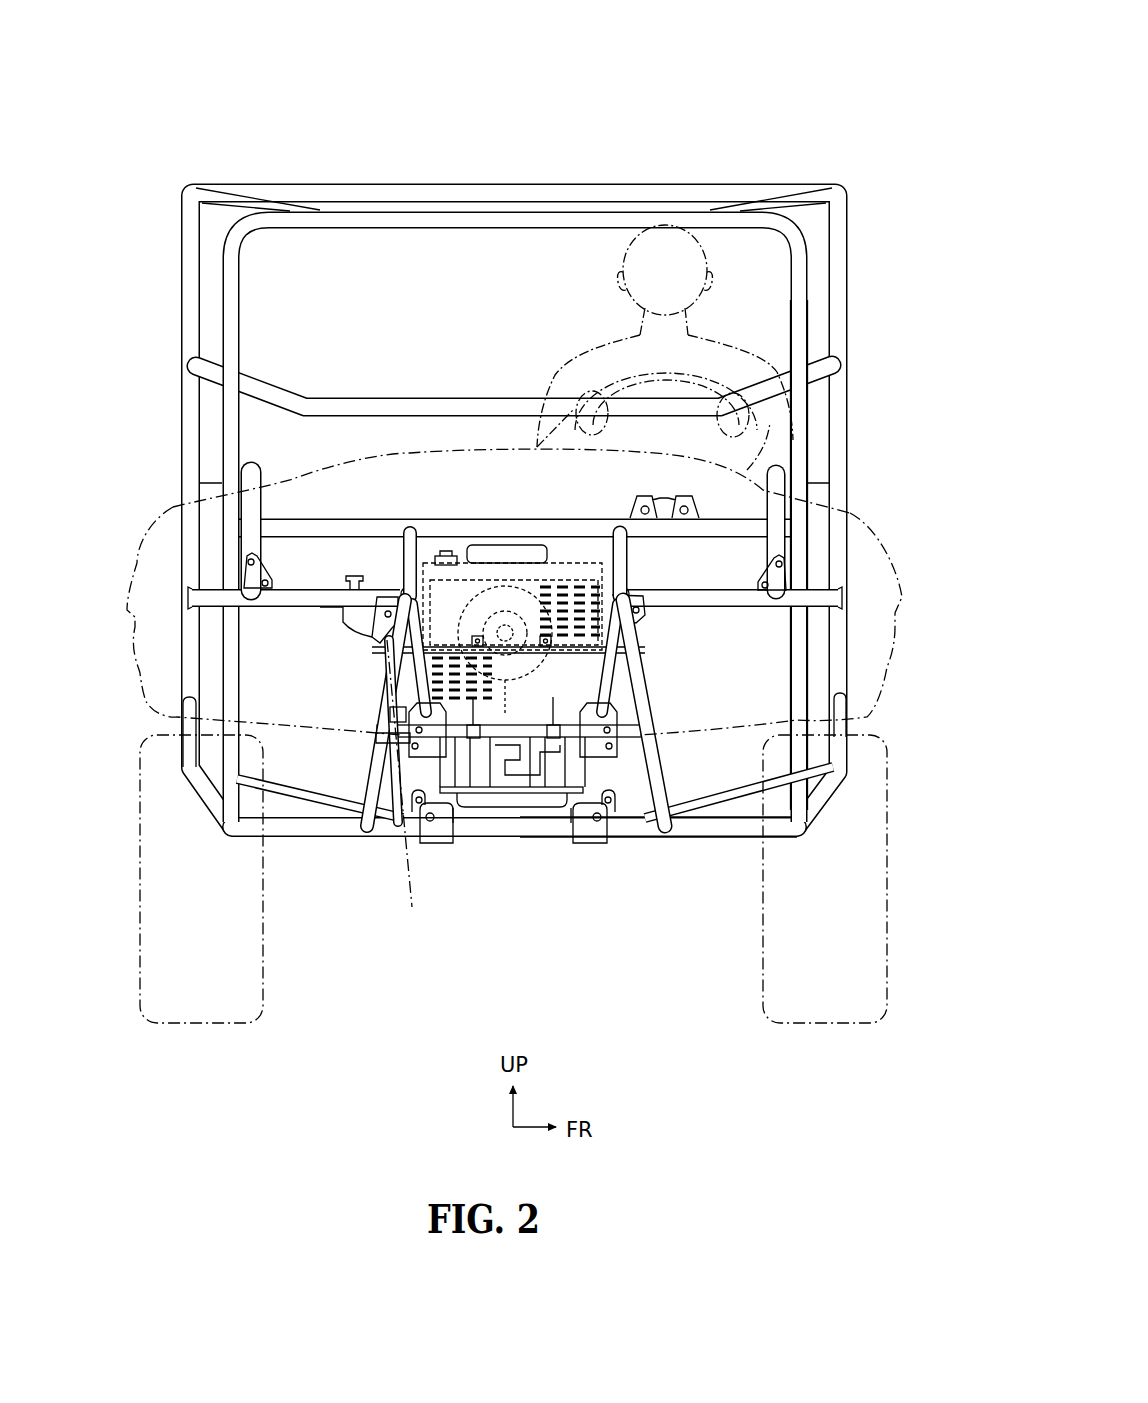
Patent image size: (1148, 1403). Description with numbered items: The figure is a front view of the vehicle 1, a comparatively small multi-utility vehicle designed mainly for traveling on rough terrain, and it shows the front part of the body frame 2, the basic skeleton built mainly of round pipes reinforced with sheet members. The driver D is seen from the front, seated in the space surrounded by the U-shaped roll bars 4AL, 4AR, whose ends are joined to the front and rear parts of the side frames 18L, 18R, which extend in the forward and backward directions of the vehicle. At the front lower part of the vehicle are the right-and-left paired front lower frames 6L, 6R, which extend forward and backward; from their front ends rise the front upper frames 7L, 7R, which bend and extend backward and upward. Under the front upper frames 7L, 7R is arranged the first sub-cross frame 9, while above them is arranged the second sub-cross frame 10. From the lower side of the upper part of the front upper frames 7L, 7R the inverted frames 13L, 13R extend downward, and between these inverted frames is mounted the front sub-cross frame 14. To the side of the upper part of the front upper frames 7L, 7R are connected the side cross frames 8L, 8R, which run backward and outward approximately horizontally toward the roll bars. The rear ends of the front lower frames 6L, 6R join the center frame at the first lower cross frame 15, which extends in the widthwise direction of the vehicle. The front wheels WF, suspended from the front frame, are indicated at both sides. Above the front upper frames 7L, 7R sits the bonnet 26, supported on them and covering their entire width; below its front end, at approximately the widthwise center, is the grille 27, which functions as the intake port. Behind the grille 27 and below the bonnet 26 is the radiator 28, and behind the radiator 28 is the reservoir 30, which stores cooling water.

The vehicle 1 is at (708, 93).
The body frame 2 is at (577, 203).
The roll bar 4AR is at (228, 292).
The roll bar 4AL is at (802, 292).
The driver D is at (601, 346).
The bonnet 26 is at (171, 506).
The reservoir 30 is at (378, 589).
The second sub-cross frame 10 is at (566, 562).
The radiator 28 is at (637, 576).
The front upper frame 7R is at (380, 650).
The front upper frame 7L is at (642, 618).
The side cross frame 8R is at (285, 608).
The side cross frame 8L is at (748, 608).
The front sub-cross frame 14 is at (635, 748).
The first lower cross frame 15 is at (726, 812).
The inverted frame 13R is at (366, 838).
The inverted frame 13L is at (667, 840).
The grille 27 is at (398, 790).
The front lower frame 6R is at (450, 845).
The front lower frame 6L is at (574, 845).
The first sub-cross frame 9 is at (535, 742).
The side frame 18R is at (295, 836).
The side frame 18L is at (733, 836).
The front wheel WF is at (210, 1025).